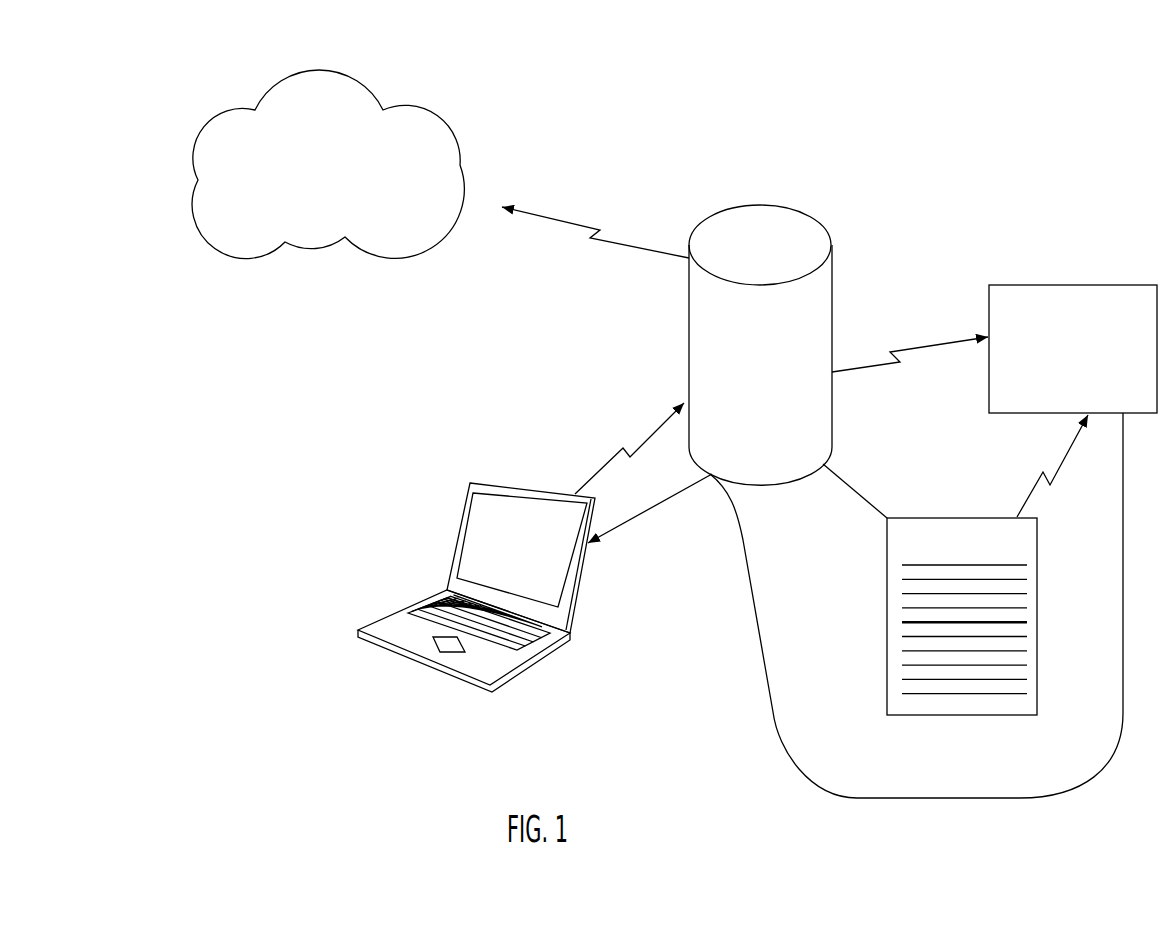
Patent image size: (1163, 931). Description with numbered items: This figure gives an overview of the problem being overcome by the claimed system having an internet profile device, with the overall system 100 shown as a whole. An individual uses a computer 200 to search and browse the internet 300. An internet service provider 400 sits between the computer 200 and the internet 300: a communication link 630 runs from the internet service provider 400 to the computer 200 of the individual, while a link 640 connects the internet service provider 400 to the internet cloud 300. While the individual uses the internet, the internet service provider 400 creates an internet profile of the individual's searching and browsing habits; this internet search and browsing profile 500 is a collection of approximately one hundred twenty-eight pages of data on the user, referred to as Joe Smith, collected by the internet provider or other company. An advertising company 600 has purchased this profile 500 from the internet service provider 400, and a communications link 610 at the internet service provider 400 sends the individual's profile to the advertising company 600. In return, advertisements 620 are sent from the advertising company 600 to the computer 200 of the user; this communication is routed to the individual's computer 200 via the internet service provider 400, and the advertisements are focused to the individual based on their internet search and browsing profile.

The overall system 100 is at (255, 448).
The computer 200 is at (450, 688).
The internet 300 is at (390, 258).
The internet service provider 400 is at (778, 203).
The internet search and browsing profile 500 is at (1038, 613).
The advertising company 600 is at (1022, 283).
The communications link 610 is at (910, 346).
The advertisements 620 is at (977, 802).
The communication link 630 is at (643, 473).
The link 640 is at (595, 227).